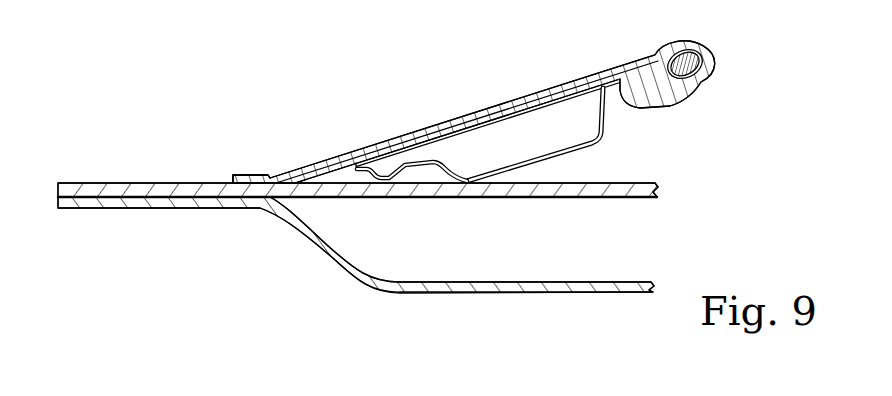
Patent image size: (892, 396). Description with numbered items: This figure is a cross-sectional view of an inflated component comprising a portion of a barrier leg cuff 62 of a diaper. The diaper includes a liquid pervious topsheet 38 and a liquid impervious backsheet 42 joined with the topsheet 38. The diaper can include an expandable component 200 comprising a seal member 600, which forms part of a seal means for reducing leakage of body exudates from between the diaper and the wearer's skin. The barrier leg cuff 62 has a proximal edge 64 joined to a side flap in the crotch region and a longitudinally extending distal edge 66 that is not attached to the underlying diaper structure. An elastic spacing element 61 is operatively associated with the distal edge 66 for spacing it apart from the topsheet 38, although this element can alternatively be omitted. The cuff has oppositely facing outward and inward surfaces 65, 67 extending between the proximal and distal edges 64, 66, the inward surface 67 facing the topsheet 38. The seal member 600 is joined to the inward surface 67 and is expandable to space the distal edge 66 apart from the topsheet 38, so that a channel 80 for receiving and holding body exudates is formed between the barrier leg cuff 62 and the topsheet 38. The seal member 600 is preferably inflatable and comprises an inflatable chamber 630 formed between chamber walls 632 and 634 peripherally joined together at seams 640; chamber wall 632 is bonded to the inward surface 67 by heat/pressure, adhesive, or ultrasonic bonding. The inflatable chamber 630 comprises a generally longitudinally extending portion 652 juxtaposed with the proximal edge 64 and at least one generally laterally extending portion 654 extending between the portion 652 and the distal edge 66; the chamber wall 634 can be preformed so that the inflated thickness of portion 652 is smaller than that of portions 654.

The topsheet 38 is at (122, 190).
The backsheet 42 is at (160, 207).
The elastic spacing element 61 is at (678, 50).
The barrier leg cuff 62 is at (493, 97).
The proximal edge 64 is at (247, 178).
The outward surface 65 is at (370, 162).
The distal edge 66 is at (700, 47).
The inward surface 67 is at (305, 162).
The channel 80 is at (310, 176).
The expandable component 200 is at (493, 181).
The seal member 600 is at (518, 193).
The inflatable chamber 630 is at (403, 219).
The chamber wall 632 is at (552, 115).
The chamber wall 634 is at (607, 113).
The seams 640 is at (623, 97).
The longitudinally extending portion 652 is at (404, 183).
The laterally extending portion 654 is at (503, 168).